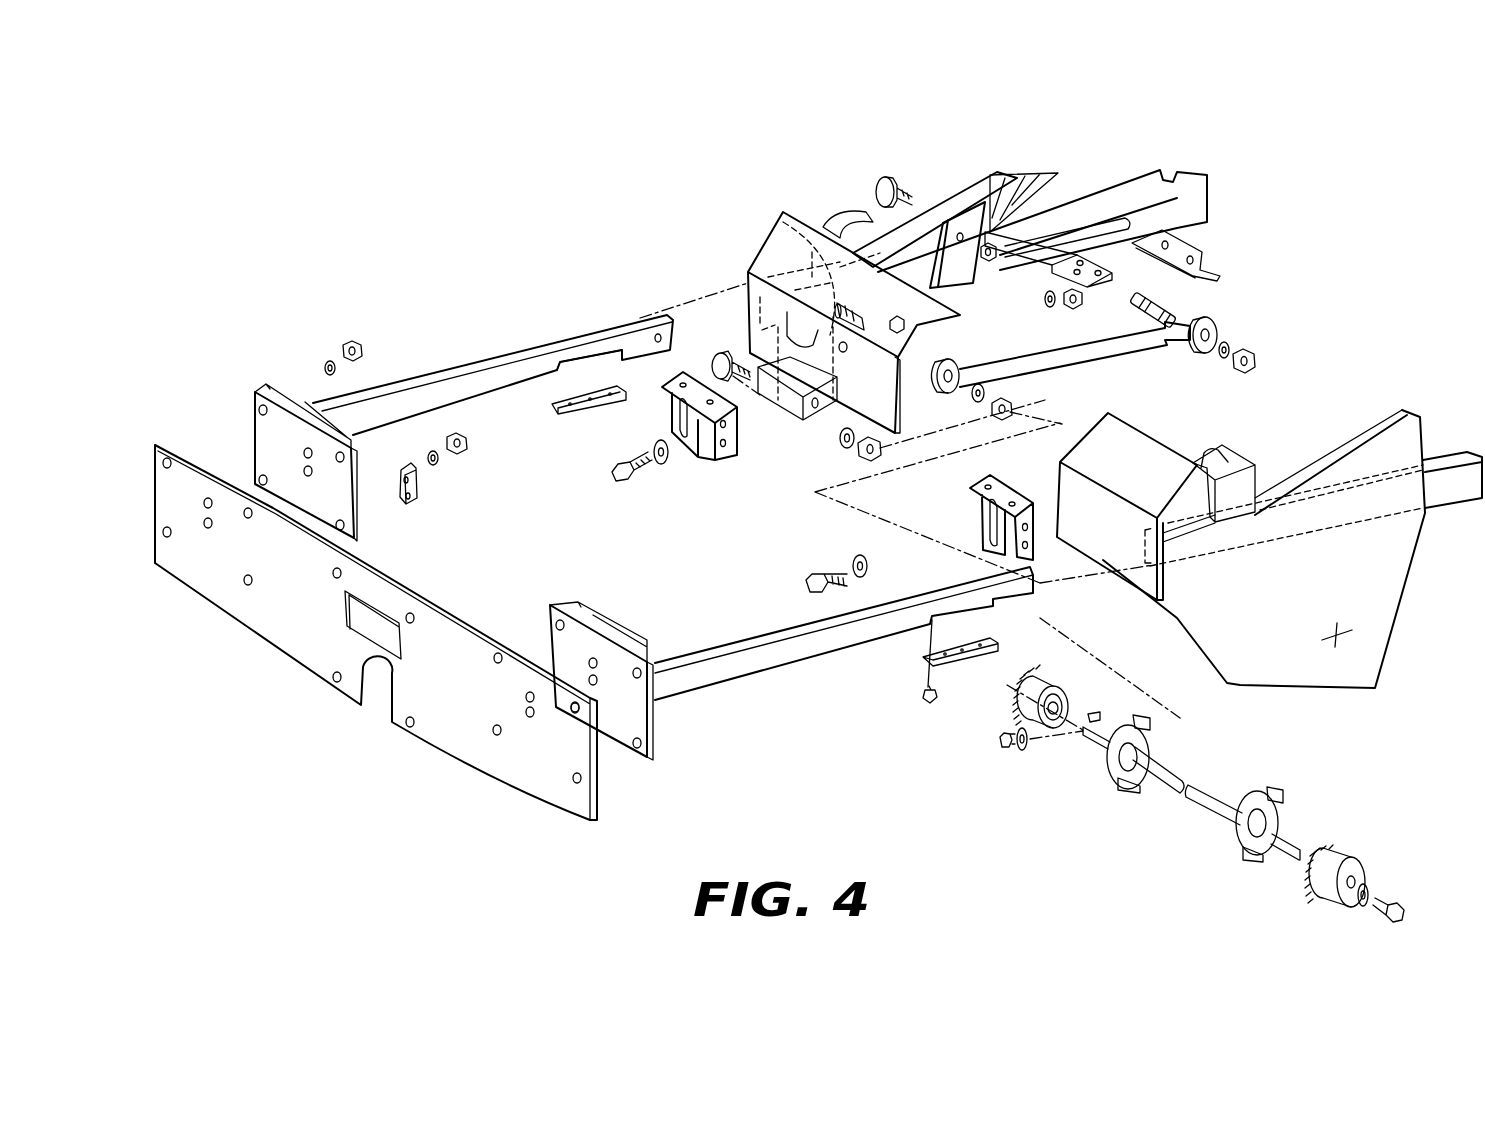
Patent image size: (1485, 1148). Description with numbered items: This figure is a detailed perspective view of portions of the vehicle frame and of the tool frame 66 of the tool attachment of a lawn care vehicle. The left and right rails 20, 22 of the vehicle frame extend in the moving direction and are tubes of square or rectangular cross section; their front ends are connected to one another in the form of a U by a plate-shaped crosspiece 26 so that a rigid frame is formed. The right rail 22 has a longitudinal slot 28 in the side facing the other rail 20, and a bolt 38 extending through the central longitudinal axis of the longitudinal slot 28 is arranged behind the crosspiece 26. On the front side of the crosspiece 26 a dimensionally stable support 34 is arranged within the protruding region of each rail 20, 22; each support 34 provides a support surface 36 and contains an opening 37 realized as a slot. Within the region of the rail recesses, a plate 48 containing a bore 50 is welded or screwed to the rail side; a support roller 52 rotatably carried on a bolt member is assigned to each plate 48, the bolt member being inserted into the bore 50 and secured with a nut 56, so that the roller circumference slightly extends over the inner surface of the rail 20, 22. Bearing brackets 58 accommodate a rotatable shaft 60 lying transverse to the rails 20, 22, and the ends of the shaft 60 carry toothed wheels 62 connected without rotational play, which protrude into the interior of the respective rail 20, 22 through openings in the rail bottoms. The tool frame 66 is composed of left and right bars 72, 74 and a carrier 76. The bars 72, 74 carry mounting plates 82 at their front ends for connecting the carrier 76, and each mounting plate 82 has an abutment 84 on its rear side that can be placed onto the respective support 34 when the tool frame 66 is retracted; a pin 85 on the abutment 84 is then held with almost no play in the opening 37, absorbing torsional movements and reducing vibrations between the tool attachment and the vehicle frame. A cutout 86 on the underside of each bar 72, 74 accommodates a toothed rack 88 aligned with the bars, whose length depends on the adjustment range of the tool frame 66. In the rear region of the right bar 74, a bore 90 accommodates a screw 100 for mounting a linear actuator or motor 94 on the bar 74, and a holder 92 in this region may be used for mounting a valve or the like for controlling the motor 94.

The left rail 20 is at (1462, 503).
The right rail 22 is at (1170, 207).
The crosspiece 26 is at (1150, 433).
The longitudinal slot 28 is at (1115, 217).
The support 34 is at (680, 417).
The support surface 36 is at (685, 377).
The opening 37 is at (983, 510).
The bolt 38 is at (802, 277).
The plate 48 is at (775, 232).
The bore 50 is at (843, 352).
The support roller 52 is at (722, 353).
The nut 56 is at (857, 455).
The bearing bracket 58 is at (1262, 787).
The shaft 60 is at (1213, 813).
The wheels 62 is at (1053, 673).
The tool frame 66 is at (462, 275).
The left bar 72 is at (715, 680).
The right bar 74 is at (418, 390).
The carrier 76 is at (461, 741).
The mounting plate 82 is at (258, 435).
The abutment 84 is at (287, 390).
The pin 85 is at (406, 505).
The cutout 86 is at (590, 362).
The toothed rack 88 is at (570, 400).
The bore 90 is at (658, 334).
The holder 92 is at (1098, 287).
The linear actuator or motor 94 is at (1103, 363).
The screw 100 is at (1160, 300).